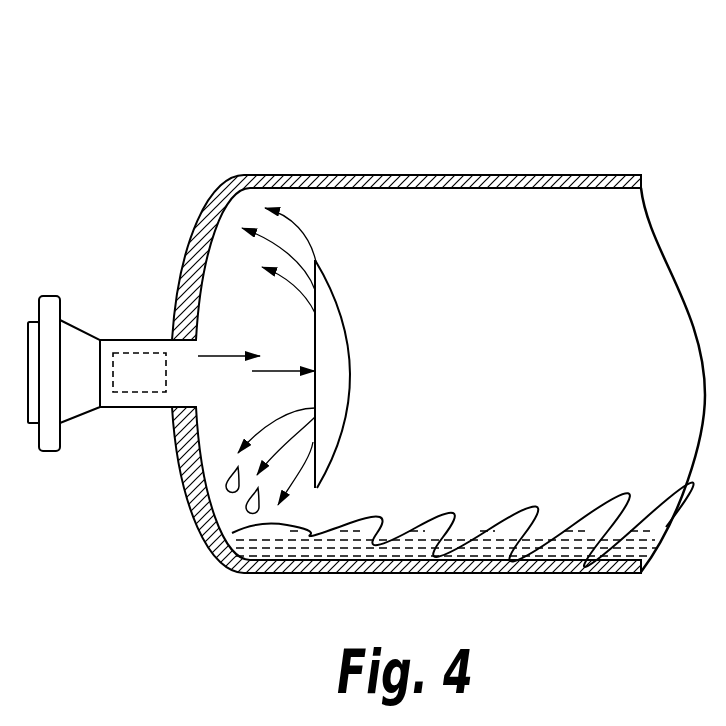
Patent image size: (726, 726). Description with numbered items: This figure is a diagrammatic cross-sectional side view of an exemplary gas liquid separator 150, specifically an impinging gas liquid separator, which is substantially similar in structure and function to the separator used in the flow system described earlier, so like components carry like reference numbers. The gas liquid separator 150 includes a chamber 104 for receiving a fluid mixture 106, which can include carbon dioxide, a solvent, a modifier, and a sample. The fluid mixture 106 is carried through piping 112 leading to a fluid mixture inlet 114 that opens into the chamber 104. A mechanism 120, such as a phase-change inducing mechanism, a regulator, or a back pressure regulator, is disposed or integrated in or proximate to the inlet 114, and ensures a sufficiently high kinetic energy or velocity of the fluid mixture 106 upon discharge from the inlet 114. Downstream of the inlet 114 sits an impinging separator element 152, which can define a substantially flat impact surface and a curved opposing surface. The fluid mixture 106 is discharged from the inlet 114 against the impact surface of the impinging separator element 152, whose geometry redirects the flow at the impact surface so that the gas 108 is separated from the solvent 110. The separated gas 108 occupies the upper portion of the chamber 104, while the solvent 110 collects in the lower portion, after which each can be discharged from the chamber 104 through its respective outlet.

The chamber 104 is at (503, 175).
The fluid mixture 106 is at (75, 362).
The gas 108 is at (435, 260).
The solvent 110 is at (427, 540).
The piping 112 is at (82, 420).
The fluid mixture inlet 114 is at (175, 440).
The mechanism 120 is at (133, 350).
The gas liquid separator 150 is at (435, 125).
The impinging separator element 152 is at (335, 432).